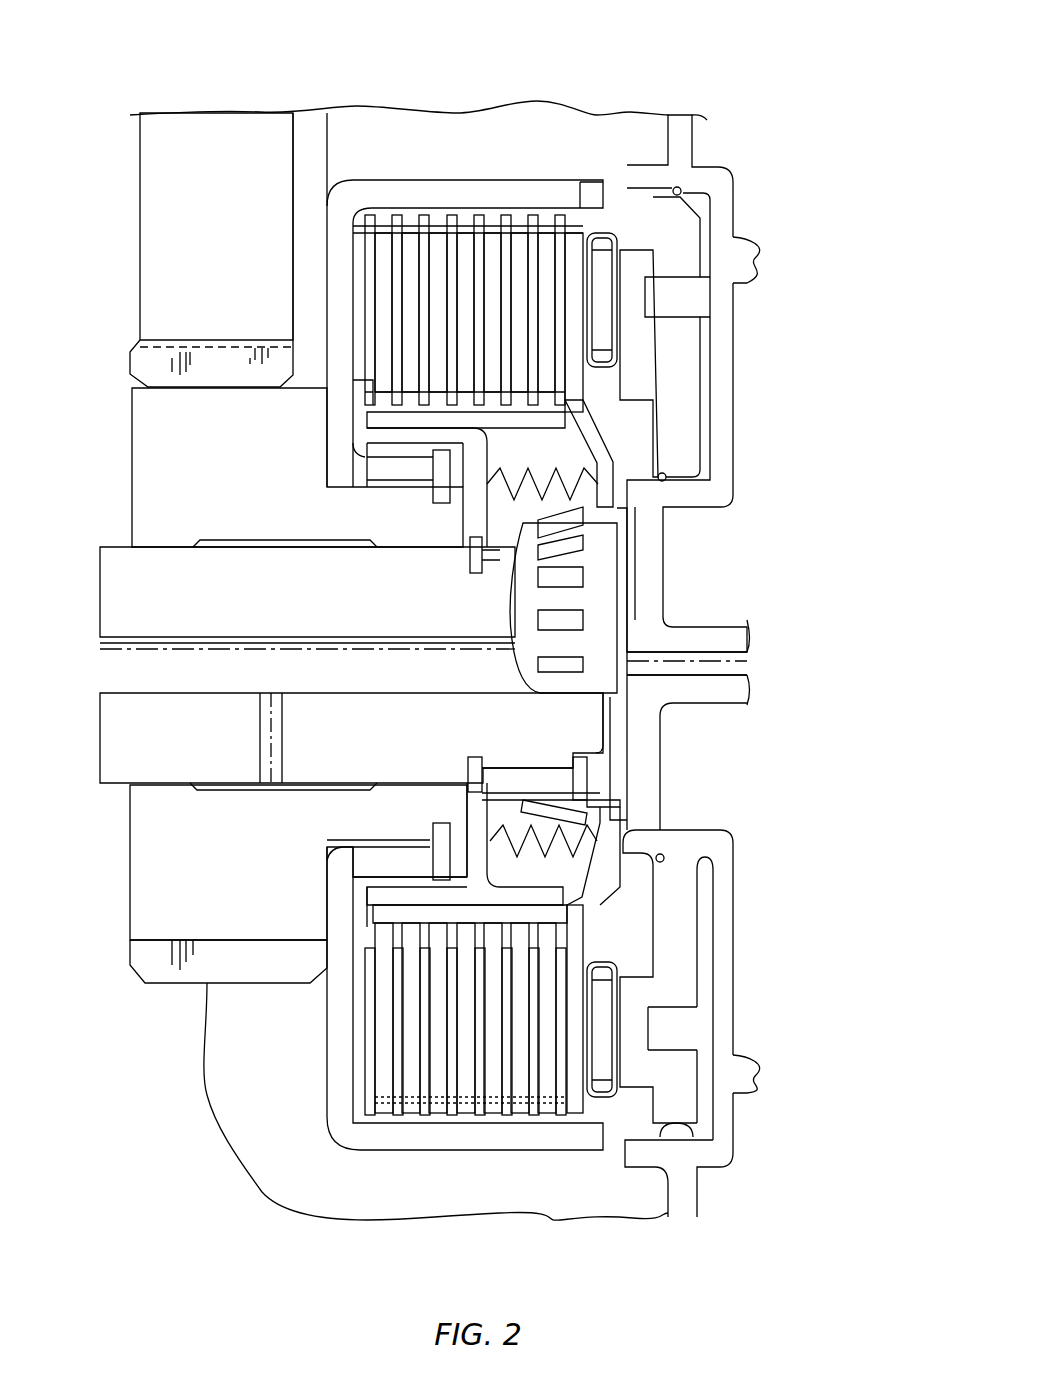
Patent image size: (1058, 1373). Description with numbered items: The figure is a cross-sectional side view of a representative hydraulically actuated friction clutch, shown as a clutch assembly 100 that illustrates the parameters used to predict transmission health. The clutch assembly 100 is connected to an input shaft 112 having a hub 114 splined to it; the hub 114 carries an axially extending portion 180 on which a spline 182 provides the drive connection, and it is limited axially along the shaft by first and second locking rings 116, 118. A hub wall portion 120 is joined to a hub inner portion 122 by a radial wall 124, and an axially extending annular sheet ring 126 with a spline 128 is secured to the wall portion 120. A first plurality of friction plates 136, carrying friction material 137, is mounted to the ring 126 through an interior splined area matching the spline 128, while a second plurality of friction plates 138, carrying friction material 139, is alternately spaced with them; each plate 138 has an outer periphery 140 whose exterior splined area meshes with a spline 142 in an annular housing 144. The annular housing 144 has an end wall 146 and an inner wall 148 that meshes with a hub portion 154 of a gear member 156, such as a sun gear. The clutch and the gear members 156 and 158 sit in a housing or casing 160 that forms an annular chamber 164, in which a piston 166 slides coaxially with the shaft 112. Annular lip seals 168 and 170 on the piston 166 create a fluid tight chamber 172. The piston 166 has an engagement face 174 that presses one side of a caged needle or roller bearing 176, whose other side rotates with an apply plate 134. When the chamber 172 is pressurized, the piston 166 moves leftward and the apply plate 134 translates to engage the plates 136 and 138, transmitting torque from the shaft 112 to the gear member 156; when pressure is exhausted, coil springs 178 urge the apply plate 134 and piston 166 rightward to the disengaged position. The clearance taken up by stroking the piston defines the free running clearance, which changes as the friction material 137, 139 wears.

The clutch assembly 100 is at (660, 60).
The input shaft 112 is at (118, 605).
The hub 114 is at (537, 790).
The first locking ring 116 is at (600, 755).
The second locking ring 118 is at (510, 553).
The hub wall portion 120 is at (377, 433).
The hub inner portion 122 is at (573, 790).
The radial wall 124 is at (465, 903).
The annular sheet ring 126 is at (507, 422).
The spline 128 is at (318, 400).
The apply plate 134 is at (616, 440).
The first plurality of friction plates 136 is at (383, 267).
The friction material 137 is at (380, 1067).
The second plurality of friction plates 138 is at (370, 215).
The friction material 139 is at (385, 1013).
The outer periphery 140 is at (403, 1118).
The spline 142 is at (583, 212).
The annular housing 144 is at (338, 1140).
The end wall 146 is at (333, 307).
The inner wall 148 is at (370, 470).
The hub portion 154 is at (126, 528).
The gear member 156 is at (163, 512).
The gear member 158 is at (165, 185).
The housing or casing 160 is at (685, 155).
The annular chamber 164 is at (705, 458).
The piston 166 is at (683, 373).
The annular lip seal 168 is at (680, 1127).
The annular lip seal 170 is at (663, 857).
The fluid tight chamber 172 is at (705, 225).
The engagement face 174 is at (613, 292).
The caged needle or roller bearing 176 is at (603, 330).
The coil springs 178 is at (533, 512).
The axially extending portion 180 is at (562, 790).
The spline 182 is at (530, 805).